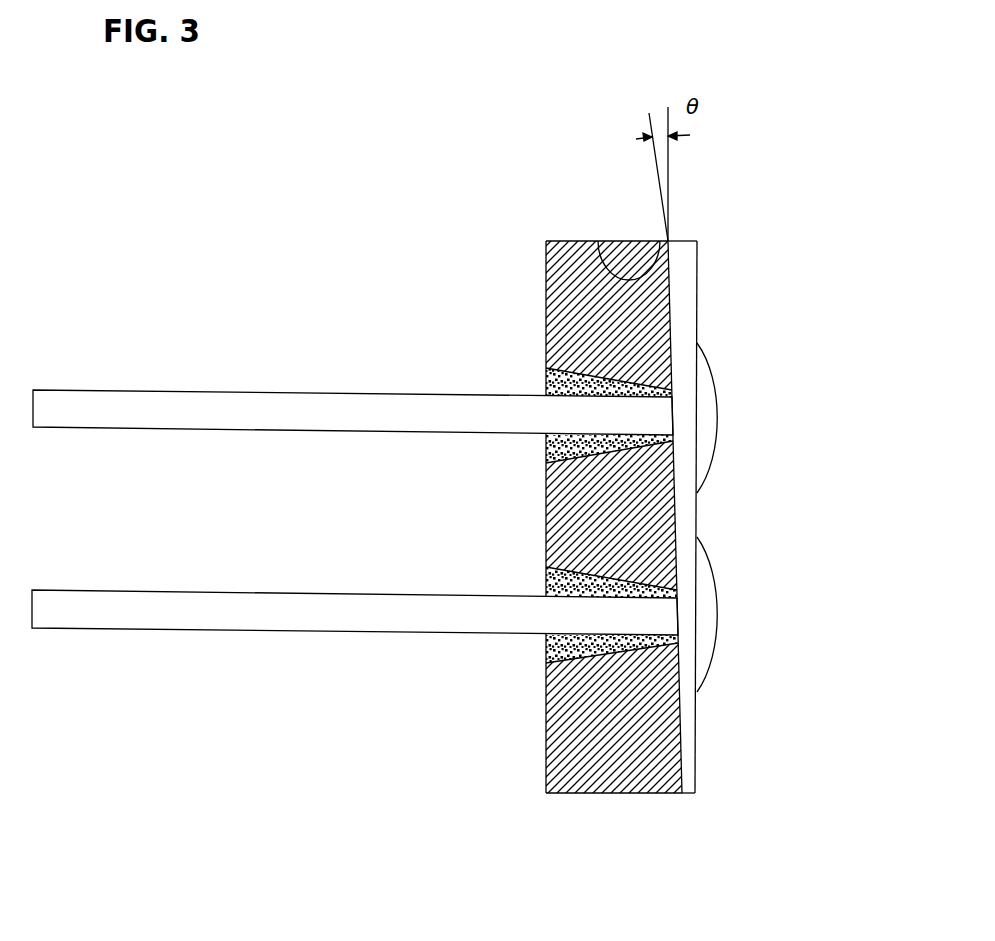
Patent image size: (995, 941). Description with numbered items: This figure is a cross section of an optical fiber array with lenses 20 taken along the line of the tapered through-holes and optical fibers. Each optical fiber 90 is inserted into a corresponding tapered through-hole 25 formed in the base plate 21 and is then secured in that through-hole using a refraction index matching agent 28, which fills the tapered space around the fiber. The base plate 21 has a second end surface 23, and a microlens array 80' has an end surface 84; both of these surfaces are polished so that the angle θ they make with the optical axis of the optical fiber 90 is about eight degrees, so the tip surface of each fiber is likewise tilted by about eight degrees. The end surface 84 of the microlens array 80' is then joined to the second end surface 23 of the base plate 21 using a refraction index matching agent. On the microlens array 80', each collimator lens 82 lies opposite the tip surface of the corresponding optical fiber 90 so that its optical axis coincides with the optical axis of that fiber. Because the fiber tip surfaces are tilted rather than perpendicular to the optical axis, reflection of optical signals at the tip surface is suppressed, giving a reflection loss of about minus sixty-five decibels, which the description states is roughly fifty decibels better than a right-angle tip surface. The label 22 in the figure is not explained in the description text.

The optical fiber array with lenses 20 is at (511, 206).
The base plate 21 is at (546, 287).
The top surface of insulator 22 is at (546, 253).
The second end surface 23 is at (600, 241).
The tapered through-hole 25 is at (546, 650).
The refraction index matching agent 28 is at (546, 582).
The microlens array 80' is at (760, 503).
The collimator lens 82 is at (702, 423).
The end surface of microlens array 84 is at (673, 305).
The optical fiber 90 is at (290, 418).